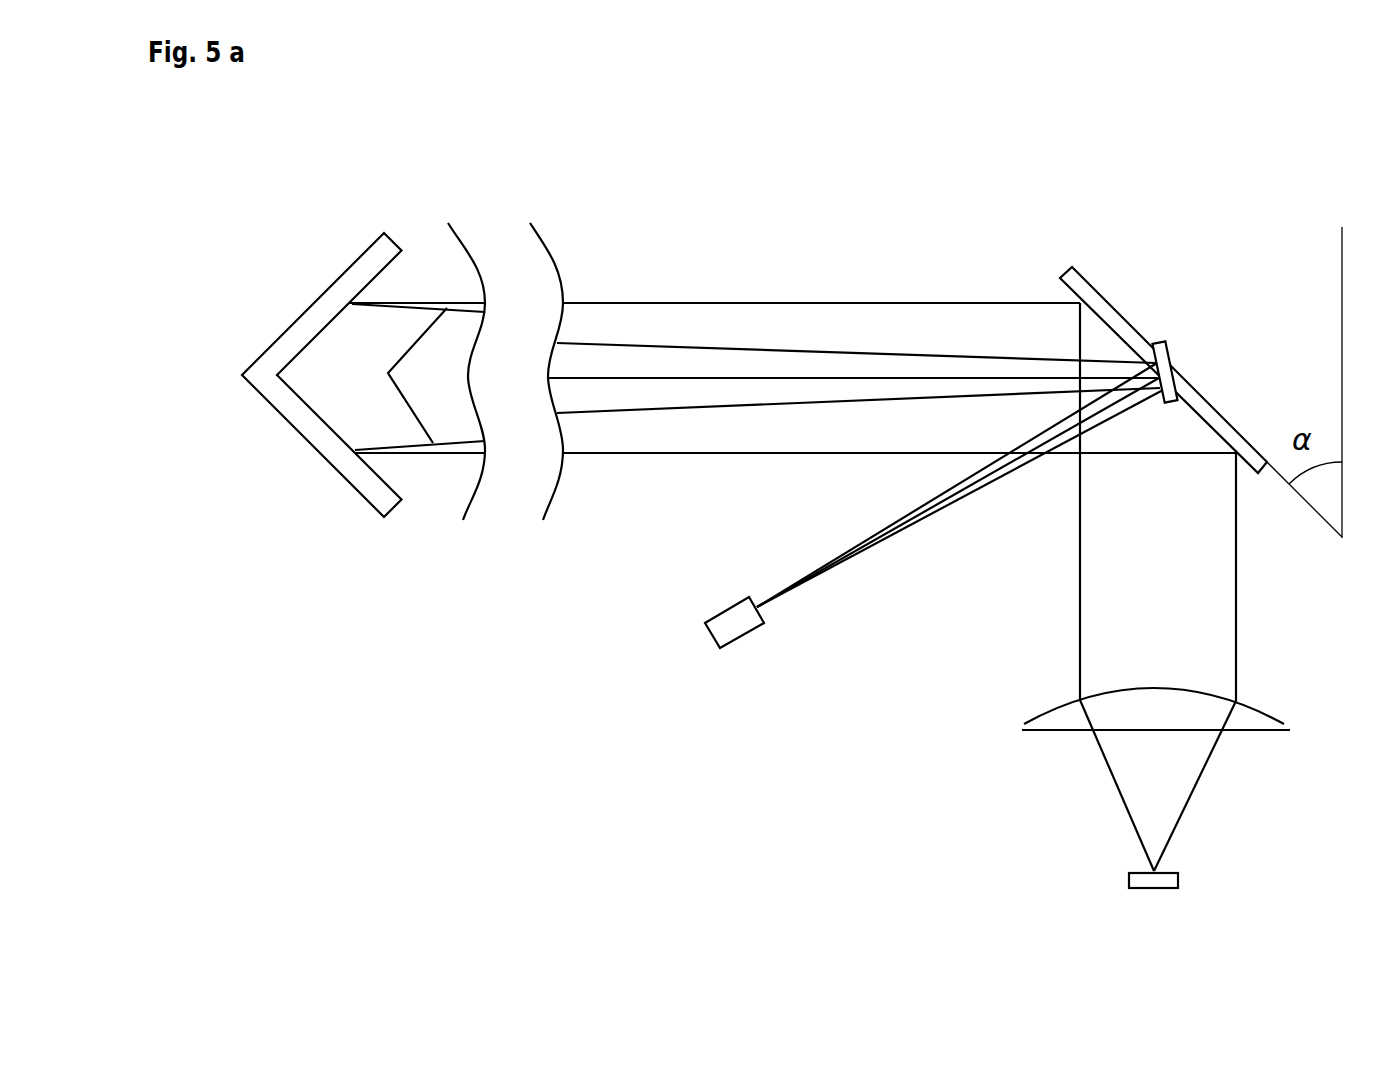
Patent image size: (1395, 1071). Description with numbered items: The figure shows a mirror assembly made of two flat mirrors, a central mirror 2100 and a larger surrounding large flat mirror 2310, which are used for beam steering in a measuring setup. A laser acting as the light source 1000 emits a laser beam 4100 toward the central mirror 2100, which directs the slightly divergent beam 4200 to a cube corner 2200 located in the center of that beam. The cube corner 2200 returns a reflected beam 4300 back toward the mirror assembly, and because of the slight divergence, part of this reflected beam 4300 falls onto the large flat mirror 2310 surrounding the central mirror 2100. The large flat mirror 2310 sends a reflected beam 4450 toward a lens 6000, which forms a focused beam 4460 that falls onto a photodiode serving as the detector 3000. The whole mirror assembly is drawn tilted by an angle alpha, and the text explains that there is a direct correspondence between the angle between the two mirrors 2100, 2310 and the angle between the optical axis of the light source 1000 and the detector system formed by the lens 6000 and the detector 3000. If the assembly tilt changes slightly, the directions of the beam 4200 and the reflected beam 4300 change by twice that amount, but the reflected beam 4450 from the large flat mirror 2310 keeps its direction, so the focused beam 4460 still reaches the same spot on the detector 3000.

The light source 1000 is at (702, 639).
The central mirror 2100 is at (1162, 357).
The cube corner 2200 is at (282, 375).
The large flat mirror 2310 is at (1102, 292).
The detector 3000 is at (1156, 901).
The laser beam 4100 is at (932, 508).
The slightly divergent beam 4200 is at (734, 344).
The reflected beam 4300 is at (462, 302).
The reflected beam from large flat mirror 4450 is at (1236, 561).
The focused beam 4460 is at (1204, 764).
The lens 6000 is at (1186, 715).